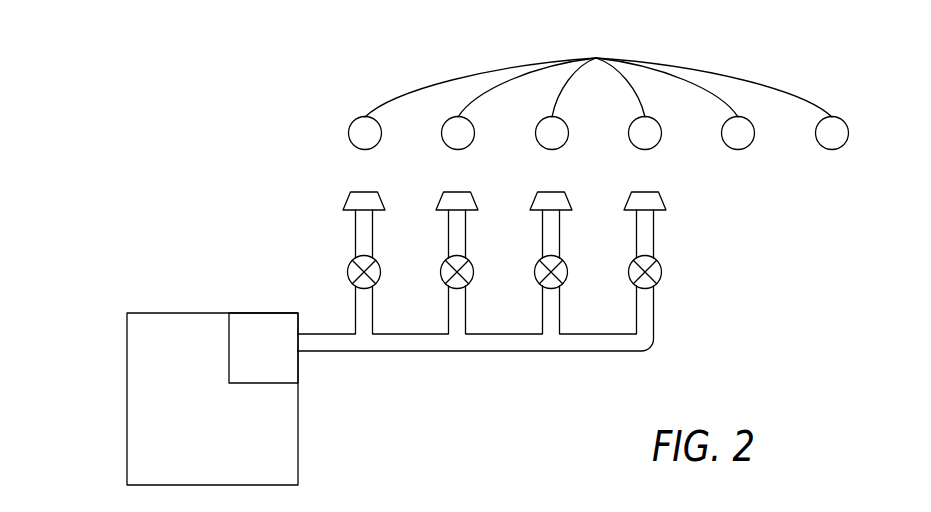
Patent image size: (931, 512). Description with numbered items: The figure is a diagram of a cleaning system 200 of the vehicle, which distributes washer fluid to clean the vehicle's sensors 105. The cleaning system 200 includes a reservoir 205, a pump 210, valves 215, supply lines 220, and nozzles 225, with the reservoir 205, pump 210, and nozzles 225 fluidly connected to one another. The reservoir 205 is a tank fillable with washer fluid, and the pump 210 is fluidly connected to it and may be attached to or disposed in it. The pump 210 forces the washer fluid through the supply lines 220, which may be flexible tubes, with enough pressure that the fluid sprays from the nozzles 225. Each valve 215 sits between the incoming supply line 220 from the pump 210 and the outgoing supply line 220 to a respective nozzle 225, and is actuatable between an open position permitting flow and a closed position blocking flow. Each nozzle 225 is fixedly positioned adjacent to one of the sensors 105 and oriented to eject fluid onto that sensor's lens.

The sensors 105 is at (599, 88).
The cleaning system 200 is at (148, 140).
The reservoir 205 is at (137, 355).
The pump 210 is at (260, 313).
The valves 215 is at (380, 272).
The supply lines 220 is at (374, 235).
The nozzles 225 is at (380, 203).